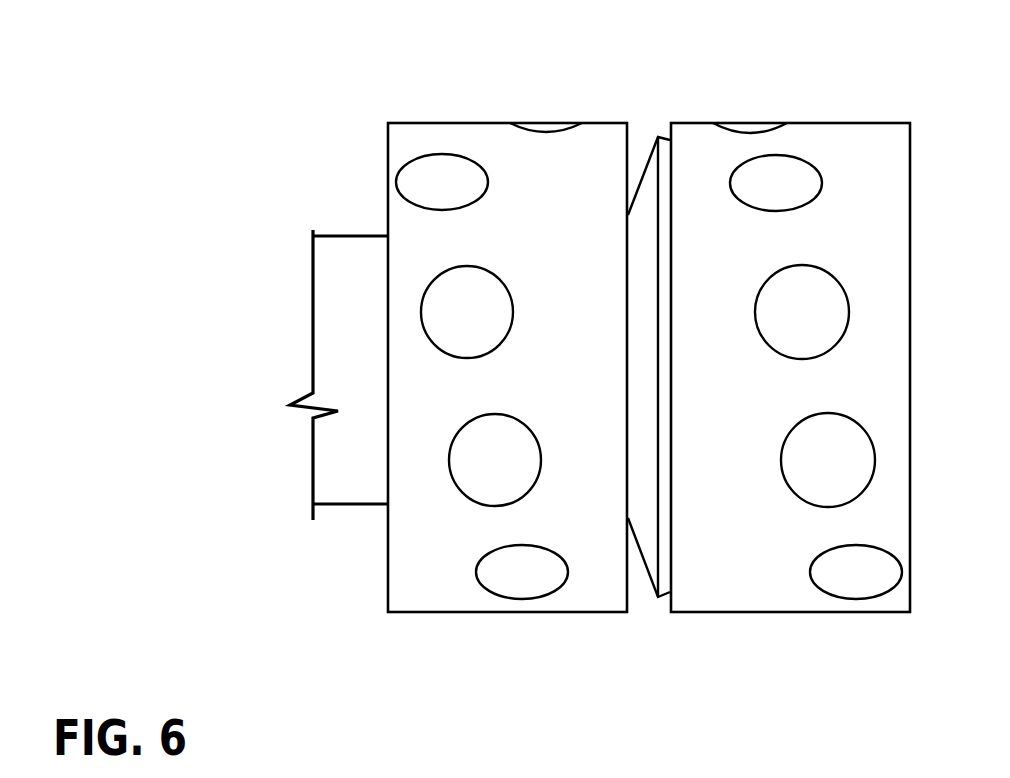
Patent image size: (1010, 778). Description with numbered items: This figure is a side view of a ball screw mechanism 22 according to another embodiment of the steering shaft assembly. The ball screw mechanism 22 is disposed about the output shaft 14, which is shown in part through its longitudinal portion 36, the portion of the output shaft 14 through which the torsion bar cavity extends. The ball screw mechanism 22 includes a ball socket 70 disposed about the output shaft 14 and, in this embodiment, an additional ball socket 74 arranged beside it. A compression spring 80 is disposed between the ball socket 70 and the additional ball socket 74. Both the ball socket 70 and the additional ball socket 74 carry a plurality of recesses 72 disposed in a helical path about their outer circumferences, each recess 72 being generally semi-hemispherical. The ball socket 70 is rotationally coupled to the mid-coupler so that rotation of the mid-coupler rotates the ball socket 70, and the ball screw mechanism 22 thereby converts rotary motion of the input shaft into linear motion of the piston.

The output shaft 14 is at (304, 360).
The ball screw mechanism 22 is at (641, 122).
The longitudinal portion 36 is at (343, 483).
The ball socket 70 is at (432, 570).
The recesses 72 is at (515, 578).
The additional ball socket 74 is at (748, 560).
The compression spring 80 is at (645, 542).